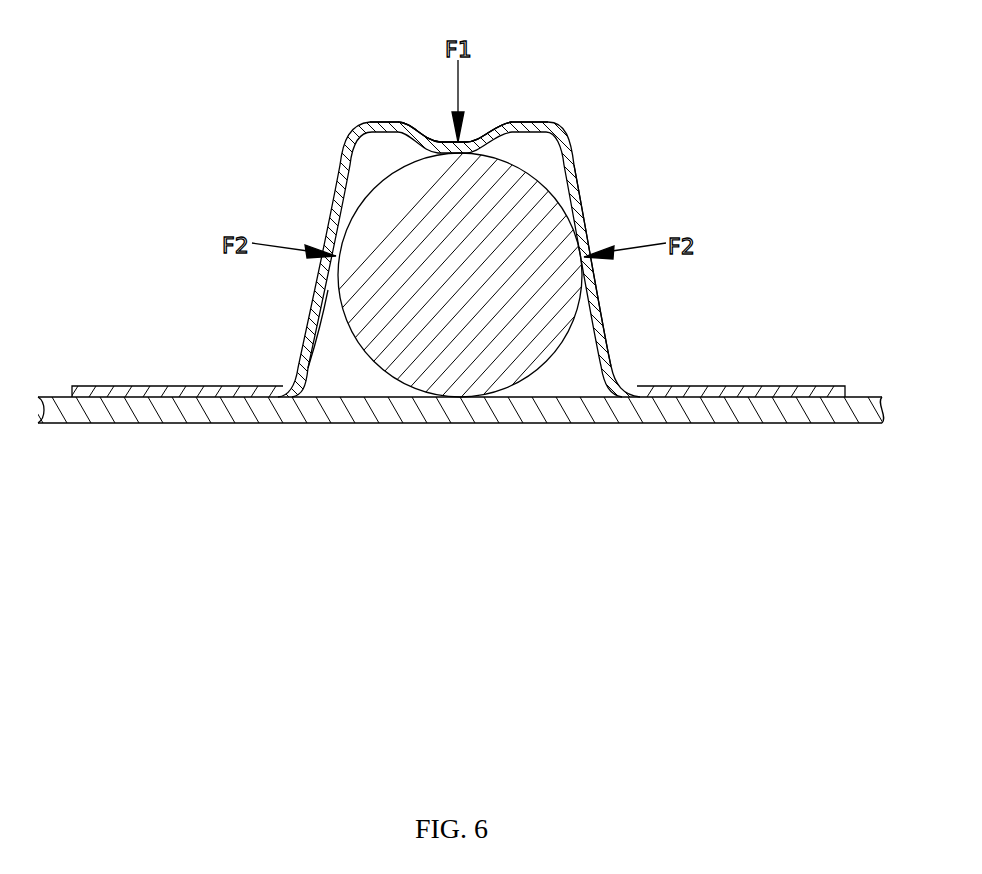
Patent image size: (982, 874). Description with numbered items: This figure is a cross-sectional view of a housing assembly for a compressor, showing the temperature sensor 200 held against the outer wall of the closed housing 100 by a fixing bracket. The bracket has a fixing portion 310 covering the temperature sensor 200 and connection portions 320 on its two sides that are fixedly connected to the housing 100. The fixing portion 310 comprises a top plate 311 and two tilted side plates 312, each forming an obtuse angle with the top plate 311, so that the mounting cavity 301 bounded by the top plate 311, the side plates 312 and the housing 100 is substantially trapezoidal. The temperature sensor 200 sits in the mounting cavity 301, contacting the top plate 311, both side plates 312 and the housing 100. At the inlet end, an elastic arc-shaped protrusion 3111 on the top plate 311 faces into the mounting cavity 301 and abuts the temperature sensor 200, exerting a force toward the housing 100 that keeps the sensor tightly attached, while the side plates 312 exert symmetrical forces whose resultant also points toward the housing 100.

The housing 100 is at (324, 419).
The connection portion 320 is at (697, 394).
The temperature sensor 200 is at (423, 225).
The fixing portion 310 is at (662, 87).
The top plate 311 is at (545, 123).
The side plate 312 is at (583, 182).
The arc-shaped protrusion 3111 is at (445, 141).
The mounting cavity 301 is at (340, 363).